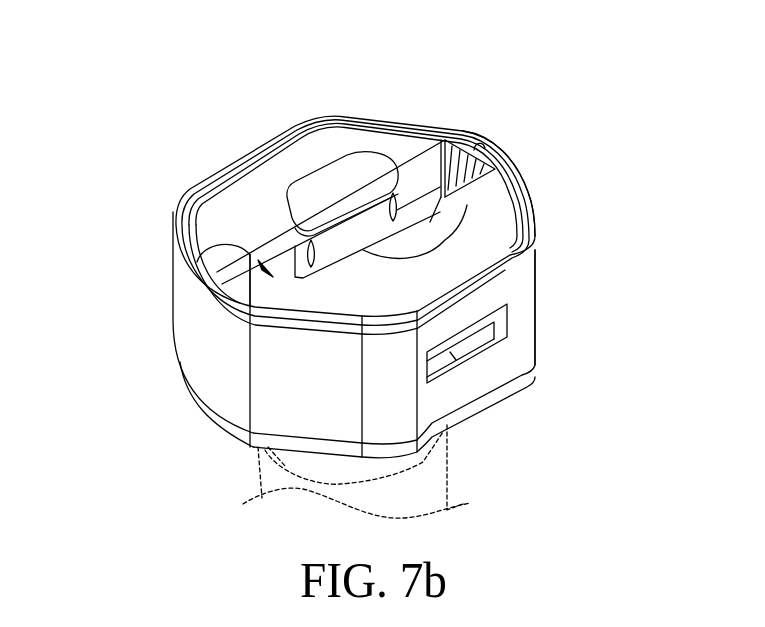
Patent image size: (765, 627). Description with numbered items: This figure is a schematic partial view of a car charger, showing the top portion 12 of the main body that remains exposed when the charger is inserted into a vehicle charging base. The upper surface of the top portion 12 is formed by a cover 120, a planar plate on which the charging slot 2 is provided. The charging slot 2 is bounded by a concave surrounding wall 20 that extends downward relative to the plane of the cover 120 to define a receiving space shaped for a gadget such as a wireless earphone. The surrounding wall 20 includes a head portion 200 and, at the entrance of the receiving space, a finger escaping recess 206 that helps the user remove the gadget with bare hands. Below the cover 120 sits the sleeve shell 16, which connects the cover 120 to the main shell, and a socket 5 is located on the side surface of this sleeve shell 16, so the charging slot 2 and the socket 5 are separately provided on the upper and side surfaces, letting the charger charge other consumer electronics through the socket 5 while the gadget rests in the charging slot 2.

The charging slot 2 is at (478, 145).
The socket 5 is at (510, 311).
The top portion 12 is at (609, 182).
The sleeve shell 16 is at (536, 266).
The surrounding wall 20 is at (426, 162).
The cover 120 is at (528, 192).
The head portion 200 is at (220, 249).
The finger escaping recess 206 is at (370, 163).